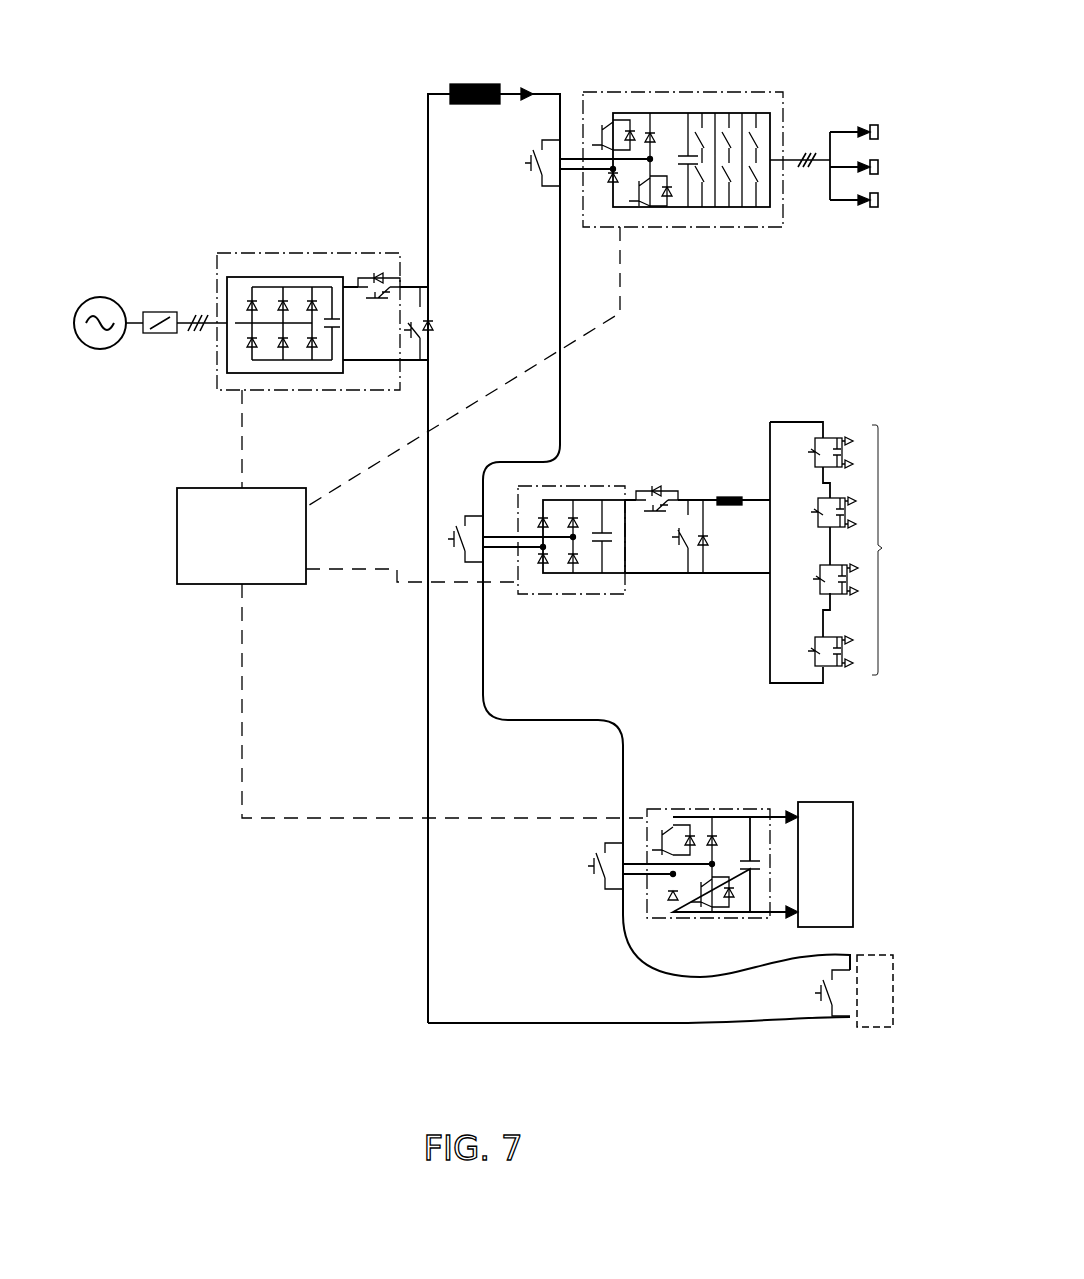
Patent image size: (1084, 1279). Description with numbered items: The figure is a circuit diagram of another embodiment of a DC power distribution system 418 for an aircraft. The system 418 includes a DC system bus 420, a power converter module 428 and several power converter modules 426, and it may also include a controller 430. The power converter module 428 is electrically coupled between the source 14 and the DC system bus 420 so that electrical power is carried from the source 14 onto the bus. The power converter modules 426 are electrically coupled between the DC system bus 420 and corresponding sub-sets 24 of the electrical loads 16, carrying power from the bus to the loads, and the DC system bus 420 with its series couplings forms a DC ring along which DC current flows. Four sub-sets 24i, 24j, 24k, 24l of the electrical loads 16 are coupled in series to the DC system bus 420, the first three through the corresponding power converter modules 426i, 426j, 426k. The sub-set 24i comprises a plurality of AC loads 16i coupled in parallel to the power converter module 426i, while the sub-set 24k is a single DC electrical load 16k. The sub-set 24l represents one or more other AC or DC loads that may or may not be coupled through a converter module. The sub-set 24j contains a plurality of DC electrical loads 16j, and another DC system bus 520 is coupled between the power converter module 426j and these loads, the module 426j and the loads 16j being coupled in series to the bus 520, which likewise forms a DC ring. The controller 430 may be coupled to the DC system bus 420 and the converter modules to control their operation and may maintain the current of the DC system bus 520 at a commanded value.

The source 14 is at (103, 296).
The electrical loads 16 is at (852, 583).
The electrical loads 16i is at (878, 128).
The electrical loads 16j is at (838, 665).
The electrical load 16k is at (855, 888).
The sub-sets of electrical loads 24 is at (852, 583).
The sub-set of electrical loads 24i is at (878, 130).
The sub-set of electrical loads 24j is at (897, 550).
The sub-set of electrical loads 24k is at (866, 864).
The sub-set of electrical loads 24l is at (873, 949).
The DC power distribution system 418 is at (504, 558).
The DC system bus 420 is at (425, 930).
The power converter modules 426 is at (639, 499).
The power converter module 426i is at (700, 232).
The power converter module 426j is at (571, 598).
The power converter module 426k is at (690, 921).
The power converter module 428 is at (298, 249).
The controller 430 is at (225, 551).
The DC system bus 520 is at (846, 520).